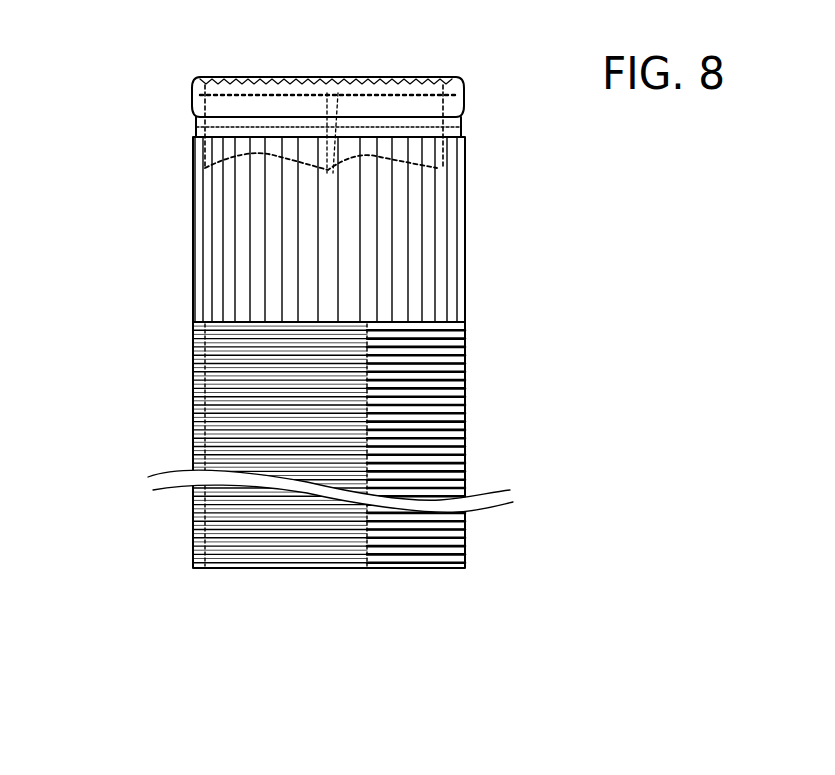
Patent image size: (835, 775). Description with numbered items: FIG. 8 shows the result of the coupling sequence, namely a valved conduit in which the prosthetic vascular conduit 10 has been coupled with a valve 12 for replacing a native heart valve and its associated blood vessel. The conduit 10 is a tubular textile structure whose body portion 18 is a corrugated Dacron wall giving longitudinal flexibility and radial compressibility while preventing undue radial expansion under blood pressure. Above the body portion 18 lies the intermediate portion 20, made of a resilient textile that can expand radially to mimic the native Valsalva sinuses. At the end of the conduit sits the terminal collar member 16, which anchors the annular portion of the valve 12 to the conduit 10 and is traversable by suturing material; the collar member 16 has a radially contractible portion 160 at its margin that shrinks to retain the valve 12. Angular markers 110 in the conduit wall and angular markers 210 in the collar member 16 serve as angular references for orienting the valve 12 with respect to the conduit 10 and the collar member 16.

The prosthetic vascular conduit 10 is at (334, 318).
The valve 12 is at (310, 380).
The terminal collar member 16 is at (465, 98).
The radially contractible portion 160 is at (206, 77).
The angular markers 210 is at (340, 100).
The intermediate portion 20 is at (228, 248).
The body portion 18 is at (247, 382).
The angular markers 110 is at (190, 523).